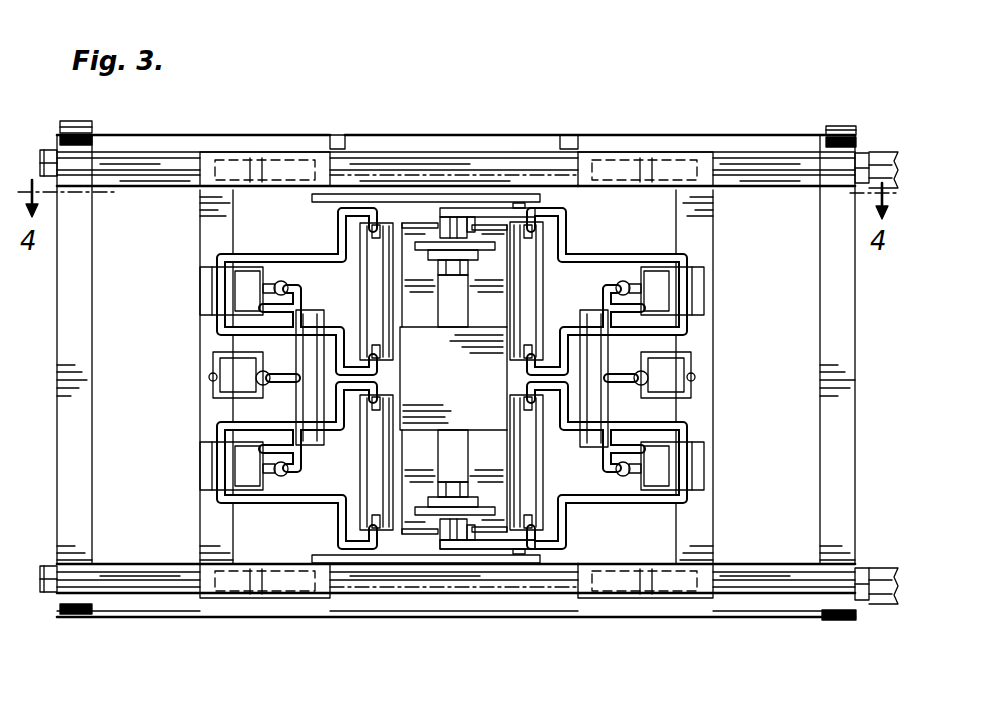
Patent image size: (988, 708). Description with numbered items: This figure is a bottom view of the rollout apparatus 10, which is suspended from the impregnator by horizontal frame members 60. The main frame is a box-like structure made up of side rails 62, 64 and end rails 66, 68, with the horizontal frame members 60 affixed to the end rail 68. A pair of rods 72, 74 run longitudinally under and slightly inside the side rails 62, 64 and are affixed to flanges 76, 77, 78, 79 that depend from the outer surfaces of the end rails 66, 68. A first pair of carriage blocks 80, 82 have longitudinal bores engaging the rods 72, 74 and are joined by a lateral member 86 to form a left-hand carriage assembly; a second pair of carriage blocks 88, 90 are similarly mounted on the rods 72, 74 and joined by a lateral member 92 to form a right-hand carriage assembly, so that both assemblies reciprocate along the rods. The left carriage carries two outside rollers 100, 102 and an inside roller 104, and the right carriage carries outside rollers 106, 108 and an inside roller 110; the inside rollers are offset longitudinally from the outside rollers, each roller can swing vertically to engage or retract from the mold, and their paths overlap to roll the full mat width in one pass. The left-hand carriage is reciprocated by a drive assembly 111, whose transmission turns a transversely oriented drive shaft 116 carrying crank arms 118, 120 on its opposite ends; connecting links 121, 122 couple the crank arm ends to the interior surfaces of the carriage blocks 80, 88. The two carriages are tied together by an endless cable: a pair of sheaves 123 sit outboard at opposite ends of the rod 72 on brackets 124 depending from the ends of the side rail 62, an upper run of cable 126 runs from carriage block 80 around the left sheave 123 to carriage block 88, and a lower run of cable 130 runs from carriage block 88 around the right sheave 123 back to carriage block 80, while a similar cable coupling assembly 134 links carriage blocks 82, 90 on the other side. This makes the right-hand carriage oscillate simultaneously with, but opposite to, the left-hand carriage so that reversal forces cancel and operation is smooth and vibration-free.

The rollout apparatus 10 is at (126, 622).
The horizontal frame members 60 is at (888, 155).
The side rail 62 is at (144, 184).
The side rail 64 is at (418, 608).
The end rail 66 is at (91, 440).
The end rail 68 is at (845, 352).
The rod 72 is at (760, 166).
The rod 74 is at (767, 590).
The flange 76 is at (60, 154).
The flange 77 is at (858, 160).
The flange 78 is at (56, 594).
The flange 79 is at (862, 608).
The carriage block 80 is at (248, 166).
The carriage block 82 is at (242, 594).
The lateral member 86 is at (202, 234).
The carriage block 88 is at (666, 160).
The carriage block 90 is at (670, 590).
The lateral member 92 is at (706, 238).
The outside roller 100 is at (370, 286).
The outside roller 102 is at (366, 482).
The inside roller 104 is at (305, 358).
The outside roller 106 is at (530, 288).
The outside roller 108 is at (520, 486).
The inside roller 110 is at (598, 360).
The drive assembly 111 is at (470, 394).
The drive shaft 116 is at (454, 548).
The crank arm 118 is at (494, 204).
The crank arm 120 is at (496, 554).
The connecting link 121 is at (414, 192).
The connecting link 122 is at (382, 566).
The sheave 123 is at (97, 138).
The bracket 124 is at (92, 108).
The upper run of cable 126 is at (211, 138).
The lower run of cable 130 is at (713, 136).
The cable coupling assembly 134 is at (194, 622).